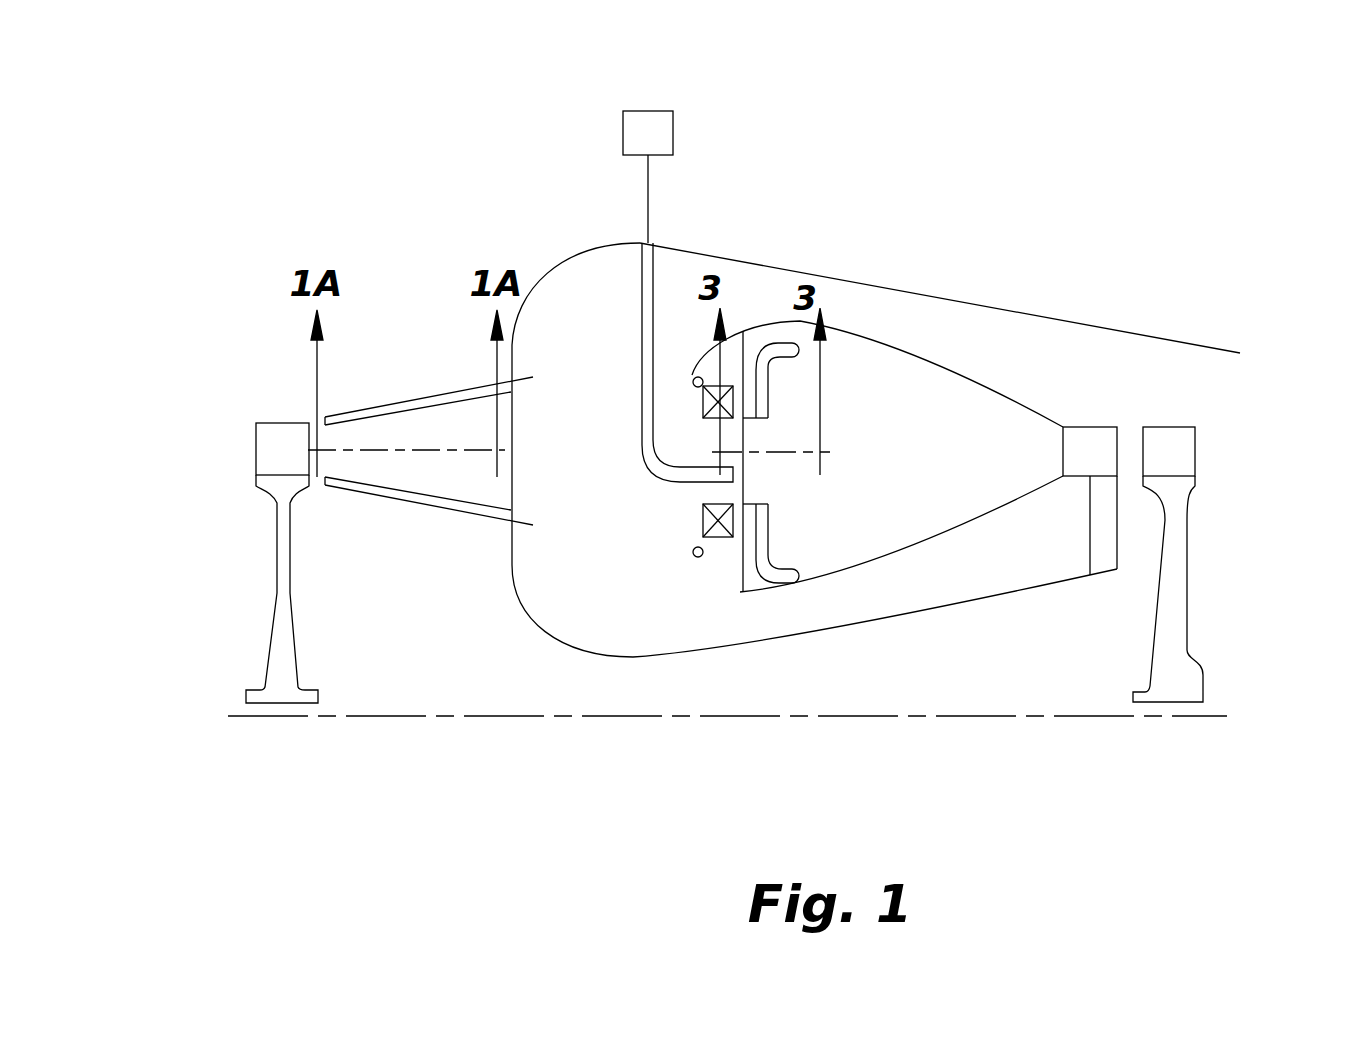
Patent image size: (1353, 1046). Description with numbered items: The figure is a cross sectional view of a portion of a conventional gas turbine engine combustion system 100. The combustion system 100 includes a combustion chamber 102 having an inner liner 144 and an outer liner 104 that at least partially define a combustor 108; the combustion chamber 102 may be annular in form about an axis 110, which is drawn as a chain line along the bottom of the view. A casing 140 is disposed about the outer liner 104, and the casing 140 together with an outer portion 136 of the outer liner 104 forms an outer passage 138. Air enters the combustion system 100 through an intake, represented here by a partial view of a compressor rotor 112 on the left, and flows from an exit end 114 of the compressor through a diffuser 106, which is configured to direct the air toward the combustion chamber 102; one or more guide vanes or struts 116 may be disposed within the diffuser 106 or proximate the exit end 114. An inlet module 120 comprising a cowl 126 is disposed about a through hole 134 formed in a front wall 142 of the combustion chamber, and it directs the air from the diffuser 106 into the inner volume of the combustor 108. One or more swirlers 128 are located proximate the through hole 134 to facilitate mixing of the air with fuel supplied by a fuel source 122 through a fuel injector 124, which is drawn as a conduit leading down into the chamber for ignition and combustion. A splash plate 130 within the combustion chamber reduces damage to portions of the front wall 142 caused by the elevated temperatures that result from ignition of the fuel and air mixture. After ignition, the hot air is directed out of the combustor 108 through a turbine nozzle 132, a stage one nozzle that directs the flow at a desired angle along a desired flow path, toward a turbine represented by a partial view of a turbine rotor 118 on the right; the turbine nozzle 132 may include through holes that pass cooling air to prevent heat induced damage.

The combustion system 100 is at (1143, 147).
The combustion chamber 102 is at (955, 278).
The outer liner 104 is at (855, 324).
The diffuser 106 is at (427, 397).
The combustor 108 is at (930, 446).
The axis 110 is at (1073, 716).
The compressor rotor 112 is at (252, 504).
The exit end of the compressor 114 is at (318, 483).
The guide vanes or struts 116 is at (418, 494).
The turbine rotor 118 is at (1202, 573).
The inlet module 120 is at (677, 503).
The fuel source 122 is at (673, 133).
The fuel injector 124 is at (642, 278).
The cowl 126 is at (698, 377).
The swirlers 128 is at (705, 532).
The splash plate 130 is at (800, 575).
The turbine nozzle 132 is at (1100, 427).
The through hole 134 is at (763, 478).
The outer portion of the outer liner 136 is at (978, 355).
The outer passage 138 is at (950, 337).
The casing 140 is at (1113, 329).
The front wall 142 is at (749, 335).
The inner liner 144 is at (913, 545).